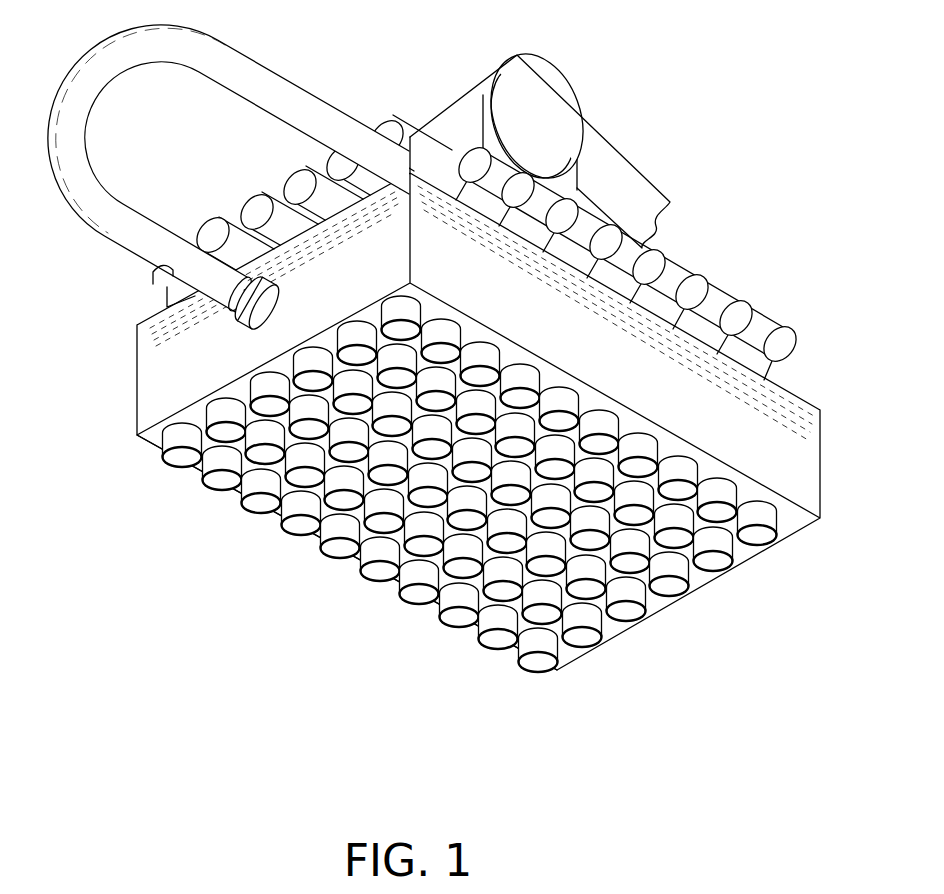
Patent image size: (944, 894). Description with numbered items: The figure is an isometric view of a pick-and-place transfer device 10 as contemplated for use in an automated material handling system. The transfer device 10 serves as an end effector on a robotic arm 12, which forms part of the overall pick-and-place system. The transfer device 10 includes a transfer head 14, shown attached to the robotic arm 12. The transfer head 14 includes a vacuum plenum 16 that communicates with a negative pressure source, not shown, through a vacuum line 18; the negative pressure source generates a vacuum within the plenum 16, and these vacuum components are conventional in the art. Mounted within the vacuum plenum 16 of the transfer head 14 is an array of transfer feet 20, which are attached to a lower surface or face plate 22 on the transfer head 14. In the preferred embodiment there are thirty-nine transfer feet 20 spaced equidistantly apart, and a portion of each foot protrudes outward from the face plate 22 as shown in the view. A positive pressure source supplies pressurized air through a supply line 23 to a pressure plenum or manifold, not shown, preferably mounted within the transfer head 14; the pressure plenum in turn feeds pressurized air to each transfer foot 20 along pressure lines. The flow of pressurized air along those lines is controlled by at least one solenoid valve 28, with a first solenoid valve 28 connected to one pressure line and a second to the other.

The pick-and-place transfer device 10 is at (240, 582).
The robotic arm 12 is at (603, 150).
The transfer head 14 is at (836, 470).
The vacuum plenum 16 is at (173, 390).
The vacuum line 18 is at (125, 237).
The transfer feet 20 is at (660, 656).
The face plate 22 is at (153, 435).
The supply line 23 is at (590, 215).
The solenoid valve 28 is at (433, 140).